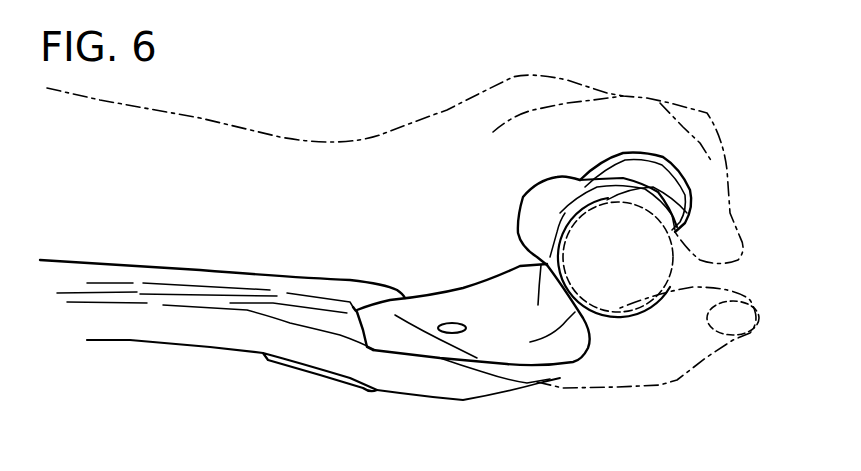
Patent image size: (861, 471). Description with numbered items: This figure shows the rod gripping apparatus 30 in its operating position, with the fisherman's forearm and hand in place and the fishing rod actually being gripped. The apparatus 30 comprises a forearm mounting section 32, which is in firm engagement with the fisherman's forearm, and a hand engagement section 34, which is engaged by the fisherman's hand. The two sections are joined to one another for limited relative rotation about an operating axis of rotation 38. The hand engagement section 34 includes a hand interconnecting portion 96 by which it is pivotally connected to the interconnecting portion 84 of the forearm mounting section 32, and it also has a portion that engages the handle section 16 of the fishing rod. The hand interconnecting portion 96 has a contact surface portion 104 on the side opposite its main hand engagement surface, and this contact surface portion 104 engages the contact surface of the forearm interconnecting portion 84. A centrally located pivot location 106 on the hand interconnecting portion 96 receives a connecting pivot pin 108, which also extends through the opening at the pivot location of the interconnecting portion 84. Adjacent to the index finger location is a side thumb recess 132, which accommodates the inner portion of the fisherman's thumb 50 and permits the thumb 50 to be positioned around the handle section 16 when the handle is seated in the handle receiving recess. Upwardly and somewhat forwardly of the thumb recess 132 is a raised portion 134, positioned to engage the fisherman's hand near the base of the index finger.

The handle section 16 is at (647, 287).
The rod gripping apparatus 30 is at (117, 344).
The forearm mounting section 32 is at (212, 337).
The hand engagement section 34 is at (477, 347).
The operating axis of rotation 38 is at (458, 323).
The thumb 50 is at (633, 373).
The interconnecting portion 84 is at (377, 392).
The hand interconnecting portion 96 is at (407, 310).
The contact surface portion 104 is at (475, 347).
The pivot location 106 is at (440, 323).
The connecting pivot pin 108 is at (467, 323).
The side thumb recess 132 is at (533, 338).
The raised portion 134 is at (659, 168).